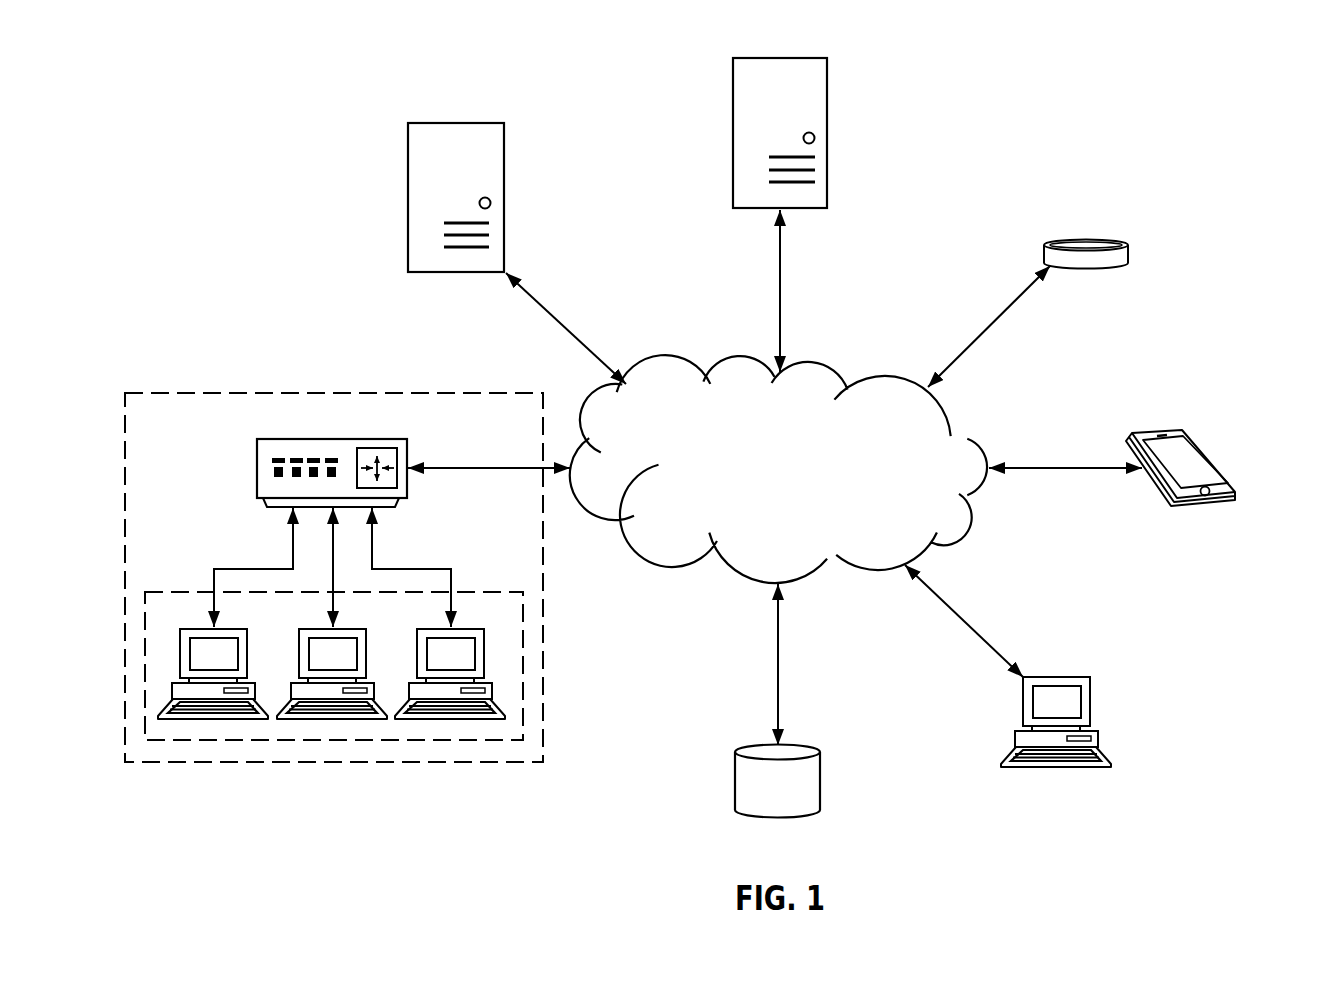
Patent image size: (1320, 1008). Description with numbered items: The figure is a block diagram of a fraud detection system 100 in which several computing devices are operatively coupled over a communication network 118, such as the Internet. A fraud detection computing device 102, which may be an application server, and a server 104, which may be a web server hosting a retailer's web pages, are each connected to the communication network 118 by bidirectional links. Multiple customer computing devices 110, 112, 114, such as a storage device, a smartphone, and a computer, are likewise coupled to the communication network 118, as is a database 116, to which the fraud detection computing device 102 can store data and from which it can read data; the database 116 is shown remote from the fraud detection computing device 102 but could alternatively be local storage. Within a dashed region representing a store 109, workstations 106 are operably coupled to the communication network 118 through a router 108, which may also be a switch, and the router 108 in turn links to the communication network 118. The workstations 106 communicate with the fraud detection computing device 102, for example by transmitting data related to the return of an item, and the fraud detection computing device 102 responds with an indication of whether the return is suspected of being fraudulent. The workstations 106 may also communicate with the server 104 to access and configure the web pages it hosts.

The fraud detection system 100 is at (1172, 46).
The fraud detection computing device 102 is at (805, 57).
The server 104 is at (430, 122).
The workstation(s) 106 is at (197, 591).
The router 108 is at (283, 438).
The store 109 is at (197, 392).
The customer computing device 110 is at (1100, 240).
The customer computing device 112 is at (1204, 462).
The customer computing device 114 is at (1080, 677).
The database 116 is at (808, 745).
The communication network 118 is at (820, 362).